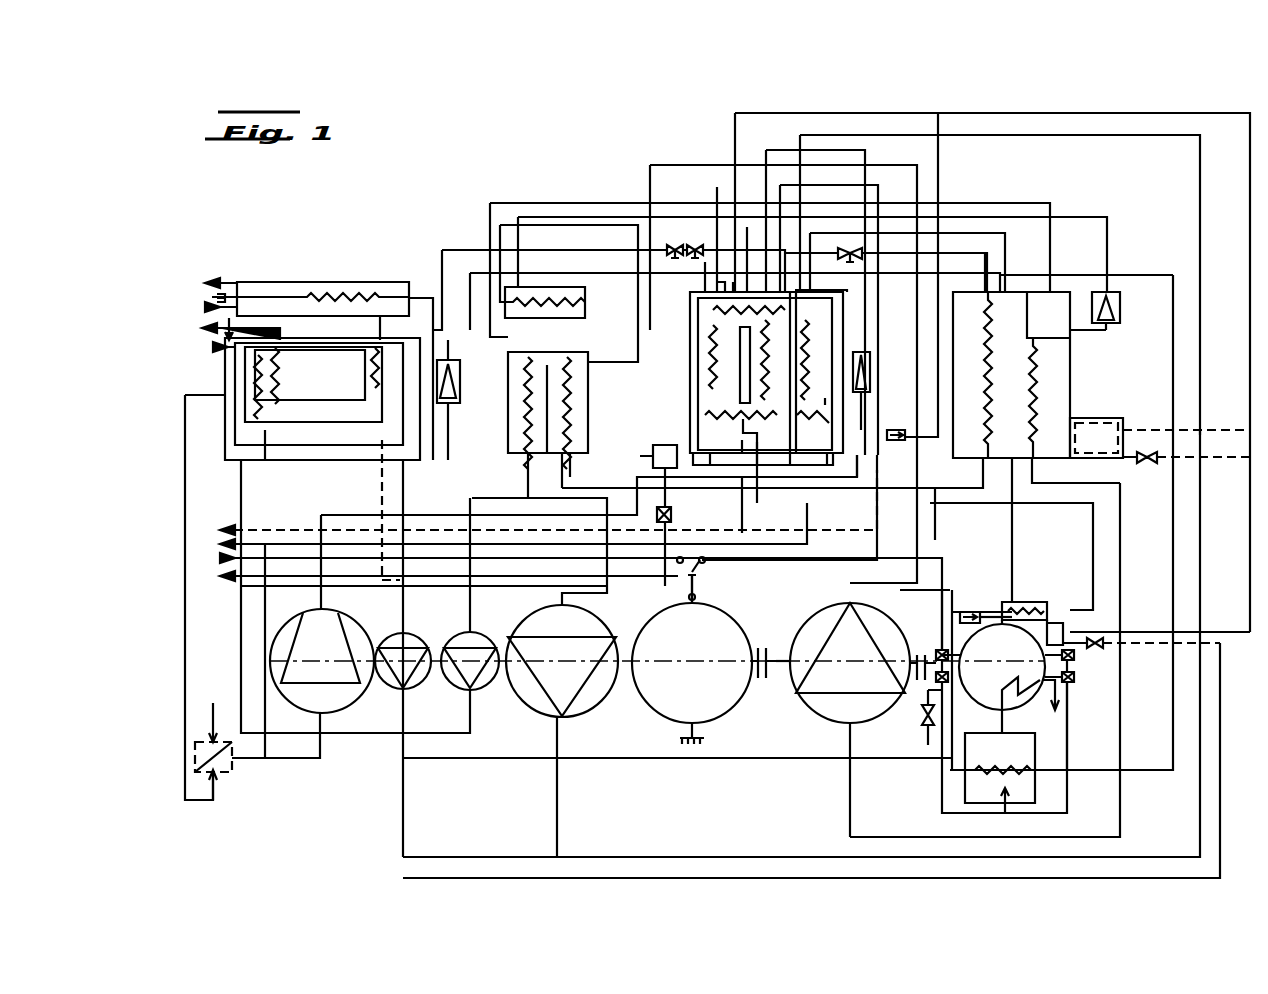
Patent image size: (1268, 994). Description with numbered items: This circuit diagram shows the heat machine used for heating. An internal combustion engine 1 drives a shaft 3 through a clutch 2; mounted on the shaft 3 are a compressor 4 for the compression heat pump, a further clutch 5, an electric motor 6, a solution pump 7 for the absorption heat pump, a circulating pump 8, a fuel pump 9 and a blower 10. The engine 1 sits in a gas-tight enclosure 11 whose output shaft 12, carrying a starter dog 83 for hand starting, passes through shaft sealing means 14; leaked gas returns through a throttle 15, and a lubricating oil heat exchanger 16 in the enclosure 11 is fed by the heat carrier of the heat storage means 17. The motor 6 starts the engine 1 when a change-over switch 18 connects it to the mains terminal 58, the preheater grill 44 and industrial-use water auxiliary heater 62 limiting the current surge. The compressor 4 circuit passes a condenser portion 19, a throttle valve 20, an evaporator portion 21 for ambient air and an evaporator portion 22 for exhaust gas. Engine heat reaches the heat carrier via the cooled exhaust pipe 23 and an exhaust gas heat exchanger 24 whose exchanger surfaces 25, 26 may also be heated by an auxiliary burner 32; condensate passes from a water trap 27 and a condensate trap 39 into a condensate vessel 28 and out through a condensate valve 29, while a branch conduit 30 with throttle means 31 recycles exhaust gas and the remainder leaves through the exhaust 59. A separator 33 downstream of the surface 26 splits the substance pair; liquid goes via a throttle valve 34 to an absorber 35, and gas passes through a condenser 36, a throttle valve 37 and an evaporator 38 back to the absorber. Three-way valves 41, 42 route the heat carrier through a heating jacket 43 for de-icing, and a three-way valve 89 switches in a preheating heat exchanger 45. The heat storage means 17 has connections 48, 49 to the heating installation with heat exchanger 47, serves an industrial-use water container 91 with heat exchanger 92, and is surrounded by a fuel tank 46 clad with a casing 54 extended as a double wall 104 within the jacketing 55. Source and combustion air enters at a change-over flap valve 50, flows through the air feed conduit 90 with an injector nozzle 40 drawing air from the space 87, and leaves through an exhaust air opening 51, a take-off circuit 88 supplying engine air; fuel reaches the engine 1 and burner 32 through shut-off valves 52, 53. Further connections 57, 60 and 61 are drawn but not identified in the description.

The internal combustion engine 1 is at (1035, 680).
The clutch 2 is at (917, 685).
The shaft 3 is at (782, 672).
The compressor 4 is at (820, 698).
The further clutch 5 is at (763, 680).
The electric motor 6 is at (725, 700).
The solution pump 7 is at (590, 700).
The circulating pump 8 is at (485, 688).
The fuel pump 9 is at (390, 690).
The blower 10 is at (345, 712).
The engine enclosure 11 is at (1068, 745).
The motor output shaft 12 is at (935, 645).
The shaft sealing means 14 is at (948, 682).
The throttle 15 is at (968, 612).
The lubricating oil heat exchanger 16 is at (1040, 790).
The heat storage means 17 is at (330, 390).
The change-over switch 18 is at (702, 578).
The condenser portion 19 is at (565, 365).
The throttle valve 20 is at (870, 372).
The evaporator portion 21 is at (715, 300).
The evaporator portion 22 is at (825, 402).
The cooled exhaust pipe 23 is at (1025, 602).
The exhaust gas heat exchanger 24 is at (1015, 300).
The exchanger surface 25 is at (992, 355).
The exchanger surface 26 is at (1040, 372).
The water separator 27 is at (822, 470).
The condensate vessel 28 is at (653, 458).
The condensate valve 29 is at (672, 515).
The branch conduit 30 is at (857, 460).
The adjustable throttle means 31 is at (908, 442).
The auxiliary burner 32 is at (1058, 622).
The separator 33 is at (1065, 330).
The throttle valve 34 is at (1115, 305).
The absorber 35 is at (545, 287).
The condenser 36 is at (515, 368).
The throttle valve 37 is at (460, 395).
The evaporator 38 is at (700, 350).
The condensate separator 39 is at (700, 422).
The injector nozzle 40 is at (733, 290).
The three-way valve 41 is at (855, 265).
The three-way valve 42 is at (692, 243).
The heating jacket 43 is at (843, 330).
The preheater grill 44 is at (718, 290).
The heat exchanger 45 is at (258, 390).
The fuel tank 46 is at (280, 430).
The heat exchanger 47 is at (280, 375).
The feed connection 48 is at (213, 347).
The return connection 49 is at (202, 328).
The change-over flap valve 50 is at (195, 755).
The exhaust air opening 51 is at (220, 530).
The shut-off valve 52 is at (925, 728).
The shut-off valve 53 is at (1098, 636).
The casing 54 is at (245, 412).
The jacketing 55 is at (235, 437).
The line 57 is at (220, 576).
The electrical main terminal 58 is at (220, 558).
The exhaust 59 is at (220, 544).
The inlet 60 is at (205, 307).
The outlet 61 is at (208, 283).
The industrial-use water auxiliary heater 62 is at (268, 298).
The starter dog 83 is at (1080, 670).
The space 87 is at (350, 388).
The take-off circuit 88 is at (863, 585).
The three-way valve 89 is at (705, 290).
The air feed conduit 90 is at (670, 243).
The industrial-use water container 91 is at (302, 282).
The heat exchanger 92 is at (740, 340).
The double wall 104 is at (225, 455).